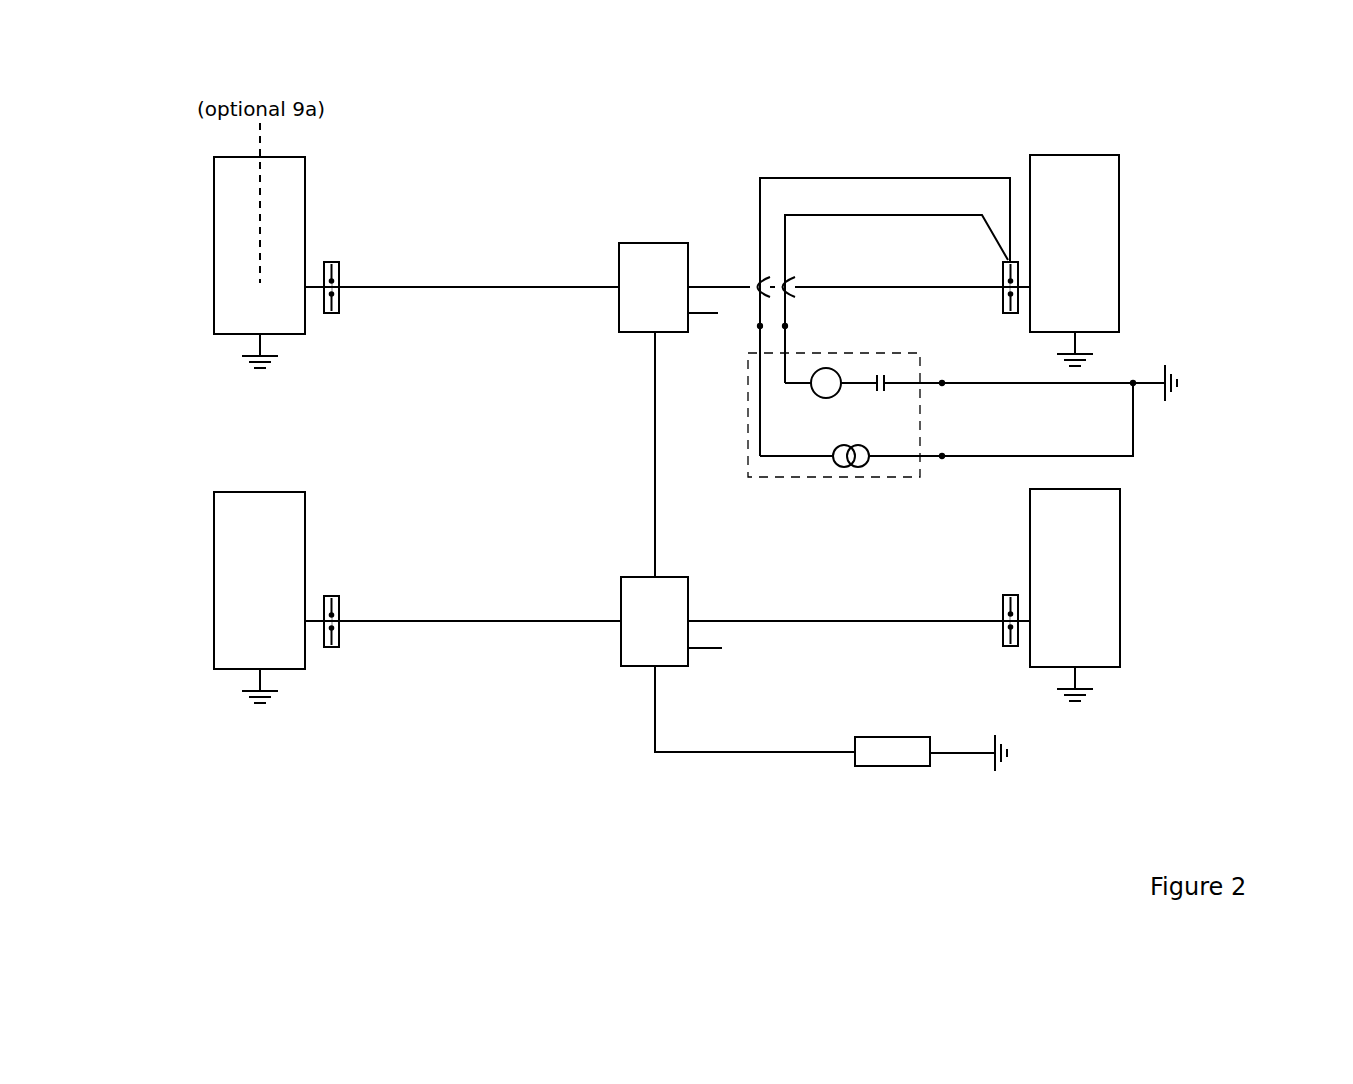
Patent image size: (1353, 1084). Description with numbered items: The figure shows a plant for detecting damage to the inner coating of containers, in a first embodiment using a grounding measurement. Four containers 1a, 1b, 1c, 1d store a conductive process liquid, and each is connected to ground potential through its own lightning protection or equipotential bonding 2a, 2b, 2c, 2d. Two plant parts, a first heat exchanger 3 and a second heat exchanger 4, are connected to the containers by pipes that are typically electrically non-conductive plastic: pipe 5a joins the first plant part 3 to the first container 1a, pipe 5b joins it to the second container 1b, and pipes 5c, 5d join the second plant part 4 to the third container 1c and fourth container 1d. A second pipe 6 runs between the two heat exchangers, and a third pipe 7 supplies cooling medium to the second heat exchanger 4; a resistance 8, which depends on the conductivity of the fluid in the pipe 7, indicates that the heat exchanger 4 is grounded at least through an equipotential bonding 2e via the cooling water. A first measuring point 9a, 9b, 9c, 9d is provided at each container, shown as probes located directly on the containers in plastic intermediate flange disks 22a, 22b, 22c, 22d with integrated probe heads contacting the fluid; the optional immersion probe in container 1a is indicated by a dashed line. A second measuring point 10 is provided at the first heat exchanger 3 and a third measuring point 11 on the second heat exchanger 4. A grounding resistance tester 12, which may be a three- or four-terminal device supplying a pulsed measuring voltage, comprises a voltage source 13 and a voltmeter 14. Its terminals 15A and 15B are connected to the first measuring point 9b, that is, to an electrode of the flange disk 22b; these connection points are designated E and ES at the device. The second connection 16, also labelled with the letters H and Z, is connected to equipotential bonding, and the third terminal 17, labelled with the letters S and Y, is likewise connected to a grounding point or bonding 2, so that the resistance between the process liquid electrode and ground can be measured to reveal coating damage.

The first container 1a is at (226, 245).
The second container 1b is at (1105, 207).
The third container 1c is at (226, 578).
The fourth container 1d is at (1105, 540).
The equipotential bonding 2 is at (1142, 386).
The equipotential bonding of first container 2a is at (263, 345).
The equipotential bonding of second container 2b is at (1077, 343).
The equipotential bonding of third container 2c is at (263, 680).
The equipotential bonding of fourth container 2d is at (1080, 677).
The equipotential bonding of cooling water line 2e is at (967, 754).
The first plant part 3 is at (655, 258).
The second plant part 4 is at (637, 650).
The first pipe 5a is at (450, 285).
The second pipe 5b is at (805, 285).
The third pipe 5c is at (452, 620).
The fourth pipe 5d is at (798, 620).
The second pipe 6 is at (654, 470).
The third pipe 7 is at (738, 750).
The resistance 8 is at (888, 744).
The first measuring point 9a is at (340, 270).
The first measuring point 9b is at (1007, 269).
The first measuring point 9c is at (340, 605).
The first measuring point 9d is at (1005, 597).
The second measuring point 10 is at (698, 315).
The third measuring point 11 is at (705, 651).
The grounding resistance tester 12 is at (770, 473).
The voltage source 13 is at (862, 447).
The voltmeter 14 is at (815, 396).
The first terminal 15A is at (920, 176).
The first terminal 15B is at (918, 213).
The second connection 16 is at (1023, 455).
The third terminal 17 is at (1023, 383).
The plastic intermediate flange disk 22a is at (340, 307).
The plastic intermediate flange disk 22b is at (1003, 297).
The plastic intermediate flange disk 22c is at (340, 640).
The plastic intermediate flange disk 22d is at (1002, 633).
The connection point E is at (758, 327).
The connection point ES is at (788, 325).